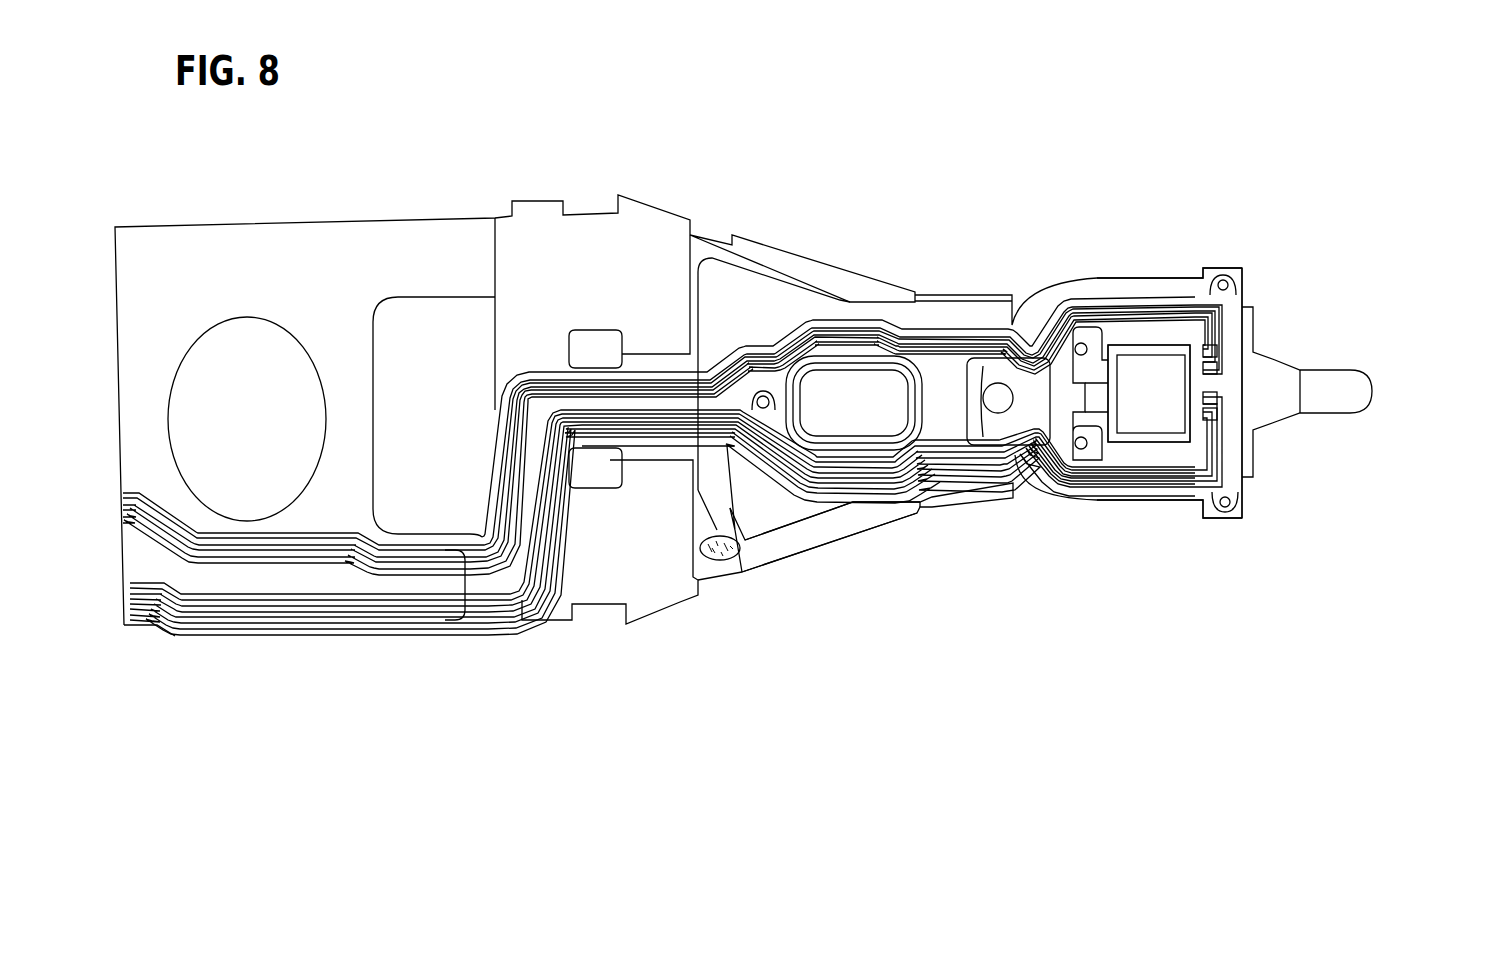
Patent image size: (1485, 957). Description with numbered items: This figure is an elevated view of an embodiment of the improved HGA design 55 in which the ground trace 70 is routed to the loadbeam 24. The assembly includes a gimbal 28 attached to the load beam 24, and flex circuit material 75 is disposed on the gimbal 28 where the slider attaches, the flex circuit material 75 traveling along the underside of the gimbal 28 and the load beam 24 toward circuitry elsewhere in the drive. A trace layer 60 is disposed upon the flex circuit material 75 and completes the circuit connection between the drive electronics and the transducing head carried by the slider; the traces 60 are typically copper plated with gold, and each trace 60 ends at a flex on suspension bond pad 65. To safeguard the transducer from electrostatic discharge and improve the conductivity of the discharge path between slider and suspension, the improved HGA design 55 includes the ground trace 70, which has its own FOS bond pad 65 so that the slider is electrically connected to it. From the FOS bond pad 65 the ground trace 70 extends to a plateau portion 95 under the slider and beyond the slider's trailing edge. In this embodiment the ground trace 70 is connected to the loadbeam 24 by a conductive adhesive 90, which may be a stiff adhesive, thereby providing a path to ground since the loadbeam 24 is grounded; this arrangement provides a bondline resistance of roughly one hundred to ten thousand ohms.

The improved HGA design 55 is at (1342, 213).
The plateau portion 95 is at (1157, 343).
The flex circuit material 75 is at (1212, 280).
The trace layer 60 is at (1093, 310).
The FOS bond pad 65 is at (1212, 368).
The gimbal 28 is at (1160, 513).
The load beam 24 is at (812, 530).
The ground trace 70 is at (735, 508).
The conductive adhesive 90 is at (723, 553).